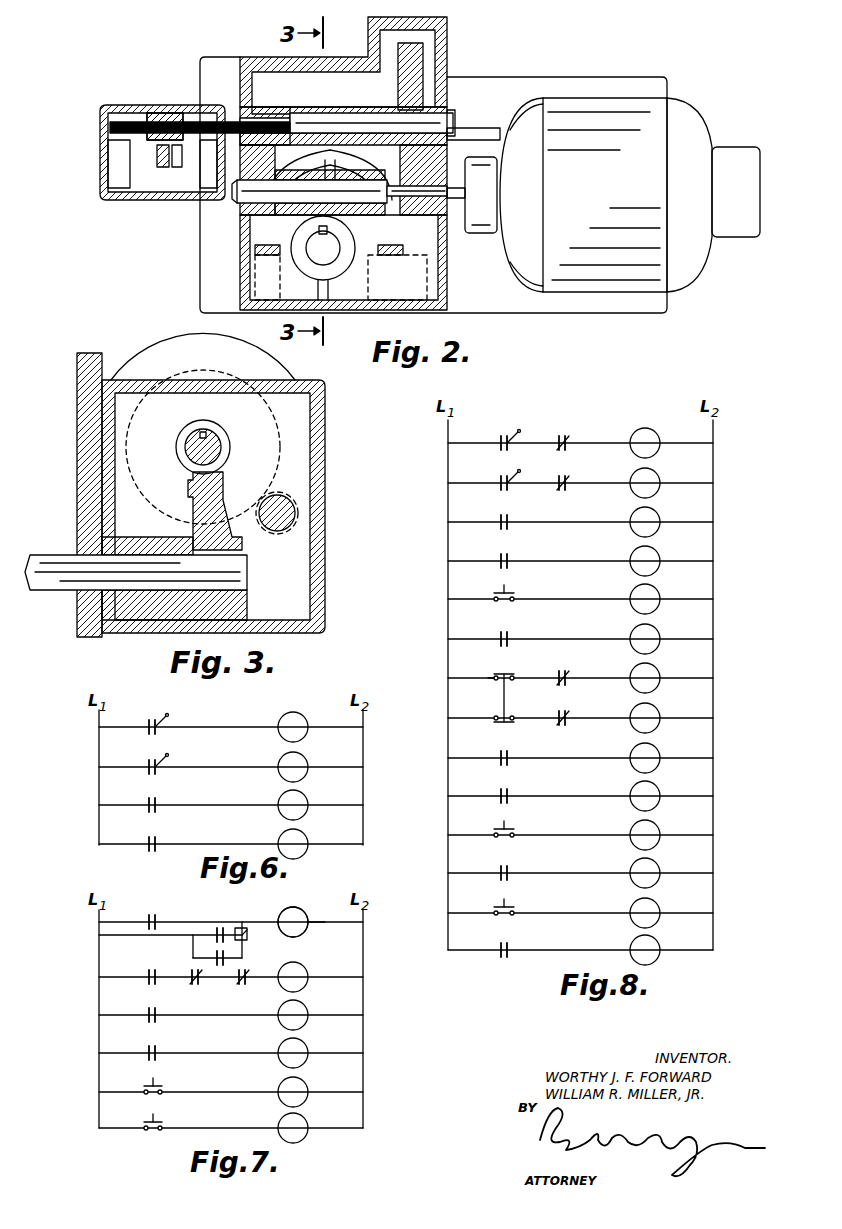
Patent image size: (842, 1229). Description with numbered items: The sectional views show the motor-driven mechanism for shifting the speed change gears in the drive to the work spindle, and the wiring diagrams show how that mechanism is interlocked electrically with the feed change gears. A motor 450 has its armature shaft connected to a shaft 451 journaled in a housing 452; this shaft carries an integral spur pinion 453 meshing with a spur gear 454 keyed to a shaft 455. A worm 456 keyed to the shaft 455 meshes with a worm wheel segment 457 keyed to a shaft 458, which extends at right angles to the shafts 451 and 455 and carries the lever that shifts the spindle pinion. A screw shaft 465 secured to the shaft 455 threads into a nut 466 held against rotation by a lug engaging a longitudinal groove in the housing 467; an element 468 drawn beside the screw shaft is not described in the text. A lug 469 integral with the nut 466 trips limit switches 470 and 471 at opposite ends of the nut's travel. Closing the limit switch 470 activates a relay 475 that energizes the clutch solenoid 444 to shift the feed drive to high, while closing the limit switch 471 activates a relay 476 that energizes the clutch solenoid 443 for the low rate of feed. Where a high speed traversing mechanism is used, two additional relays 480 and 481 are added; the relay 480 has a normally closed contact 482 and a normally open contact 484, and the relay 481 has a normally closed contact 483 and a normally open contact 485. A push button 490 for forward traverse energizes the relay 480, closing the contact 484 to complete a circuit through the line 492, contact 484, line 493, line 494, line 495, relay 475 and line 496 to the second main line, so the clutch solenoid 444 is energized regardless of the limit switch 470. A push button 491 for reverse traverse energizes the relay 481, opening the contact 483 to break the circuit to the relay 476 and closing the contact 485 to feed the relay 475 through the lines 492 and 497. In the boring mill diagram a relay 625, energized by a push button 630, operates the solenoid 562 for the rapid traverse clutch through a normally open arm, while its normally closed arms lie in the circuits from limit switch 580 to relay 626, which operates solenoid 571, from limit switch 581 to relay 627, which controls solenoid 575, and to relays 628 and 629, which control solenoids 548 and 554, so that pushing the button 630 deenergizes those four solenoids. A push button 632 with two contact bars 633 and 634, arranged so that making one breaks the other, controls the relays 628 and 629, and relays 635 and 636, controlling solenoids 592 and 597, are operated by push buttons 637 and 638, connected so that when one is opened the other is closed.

In FIG. 2, the motor 450 is at (520, 272).
In FIG. 2, the shaft 451 is at (290, 200).
In FIG. 2, the housing 452 is at (242, 256).
In FIG. 2, the spur pinion 453 is at (478, 233).
In FIG. 3, the spur pinion 453 is at (277, 535).
In FIG. 2, the spur gear 454 is at (406, 85).
In FIG. 3, the spur gear 454 is at (170, 518).
In FIG. 2, the shaft 455 is at (325, 113).
In FIG. 3, the shaft 455 is at (195, 445).
In FIG. 2, the worm 456 is at (285, 110).
In FIG. 3, the worm 456 is at (228, 448).
In FIG. 2, the worm wheel segment 457 is at (380, 222).
In FIG. 3, the worm wheel segment 457 is at (193, 480).
In FIG. 2, the shaft 458 is at (330, 245).
In FIG. 3, the shaft 458 is at (65, 565).
In FIG. 2, the screw shaft 465 is at (190, 120).
In FIG. 2, the nut 466 is at (200, 170).
In FIG. 2, the housing 467 is at (100, 175).
In FIG. 2, the spring 468 is at (140, 120).
In FIG. 2, the lug 469 is at (160, 170).
In FIG. 2, the limit switch 470 is at (118, 185).
In FIG. 6, the limit switch 470 is at (177, 720).
In FIG. 7, the limit switch 470 is at (157, 912).
In FIG. 2, the limit switch 471 is at (205, 185).
In FIG. 6, the limit switch 471 is at (177, 760).
In FIG. 7, the limit switch 471 is at (157, 982).
In FIG. 6, the relay 475 is at (157, 796).
In FIG. 7, the relay 475 is at (300, 916).
In FIG. 6, the relay 476 is at (157, 834).
In FIG. 7, the relay 476 is at (300, 970).
In FIG. 6, the clutch solenoid 444 is at (300, 798).
In FIG. 7, the clutch solenoid 444 is at (300, 1008).
In FIG. 6, the clutch solenoid 443 is at (300, 837).
In FIG. 7, the clutch solenoid 443 is at (300, 1046).
In FIG. 7, the relay 480 is at (300, 1085).
In FIG. 7, the relay 481 is at (300, 1121).
In FIG. 7, the normally closed contact 482 is at (196, 988).
In FIG. 7, the normally closed contact 483 is at (250, 982).
In FIG. 7, the normally open contact 484 is at (232, 914).
In FIG. 7, the normally open contact 485 is at (228, 961).
In FIG. 7, the push button 490 is at (156, 1085).
In FIG. 7, the push button 491 is at (156, 1121).
In FIG. 7, the line 492 is at (126, 936).
In FIG. 7, the line 493 is at (241, 925).
In FIG. 7, the line 494 is at (246, 934).
In FIG. 7, the line 495 is at (270, 920).
In FIG. 7, the line 496 is at (318, 928).
In FIG. 7, the line 497 is at (193, 954).
In FIG. 8, the solenoid 548 is at (652, 751).
In FIG. 8, the solenoid 554 is at (652, 789).
In FIG. 8, the solenoid 562 is at (652, 632).
In FIG. 8, the solenoid 571 is at (652, 515).
In FIG. 8, the solenoid 575 is at (652, 554).
In FIG. 8, the limit switch 580 is at (498, 440).
In FIG. 8, the limit switch 581 is at (498, 480).
In FIG. 8, the solenoid 592 is at (652, 866).
In FIG. 8, the solenoid 597 is at (652, 943).
In FIG. 8, the relay 625 is at (560, 438).
In FIG. 8, the relay 626 is at (650, 436).
In FIG. 8, the relay 627 is at (652, 476).
In FIG. 8, the relay 628 is at (652, 671).
In FIG. 8, the relay 629 is at (652, 711).
In FIG. 8, the push button 630 is at (507, 592).
In FIG. 8, the push button 632 is at (506, 672).
In FIG. 8, the contact bar 633 is at (496, 674).
In FIG. 8, the contact bar 634 is at (504, 726).
In FIG. 8, the relay 635 is at (652, 828).
In FIG. 8, the relay 636 is at (652, 906).
In FIG. 8, the push button 637 is at (507, 828).
In FIG. 8, the push button 638 is at (507, 906).